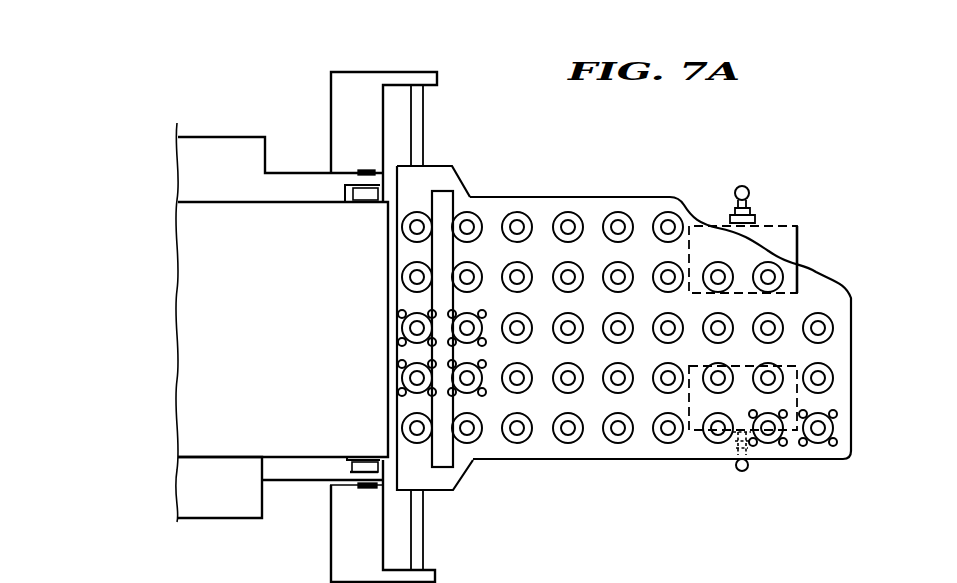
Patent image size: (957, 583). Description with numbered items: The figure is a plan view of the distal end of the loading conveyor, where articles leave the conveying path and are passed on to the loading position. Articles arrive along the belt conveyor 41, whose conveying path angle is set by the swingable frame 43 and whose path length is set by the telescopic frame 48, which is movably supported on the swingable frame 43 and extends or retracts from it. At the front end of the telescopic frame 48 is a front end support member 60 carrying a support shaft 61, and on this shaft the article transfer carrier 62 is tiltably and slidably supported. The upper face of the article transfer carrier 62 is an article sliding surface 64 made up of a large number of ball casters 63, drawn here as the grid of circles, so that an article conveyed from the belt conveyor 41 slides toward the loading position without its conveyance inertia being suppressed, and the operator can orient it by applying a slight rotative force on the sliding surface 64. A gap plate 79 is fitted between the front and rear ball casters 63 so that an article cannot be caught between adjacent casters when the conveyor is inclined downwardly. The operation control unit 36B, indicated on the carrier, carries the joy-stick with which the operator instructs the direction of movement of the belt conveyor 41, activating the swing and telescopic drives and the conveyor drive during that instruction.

The belt conveyor 41 is at (188, 223).
The swingable frame 43 is at (209, 507).
The telescopic frame 48 is at (305, 470).
The front end support member 60 is at (338, 563).
The support shaft 61 is at (418, 103).
The article transfer carrier 62 is at (851, 318).
The ball casters 63 is at (837, 430).
The sliding surface 64 is at (620, 225).
The gap plate 79 is at (447, 200).
The operation control unit 36B is at (788, 242).